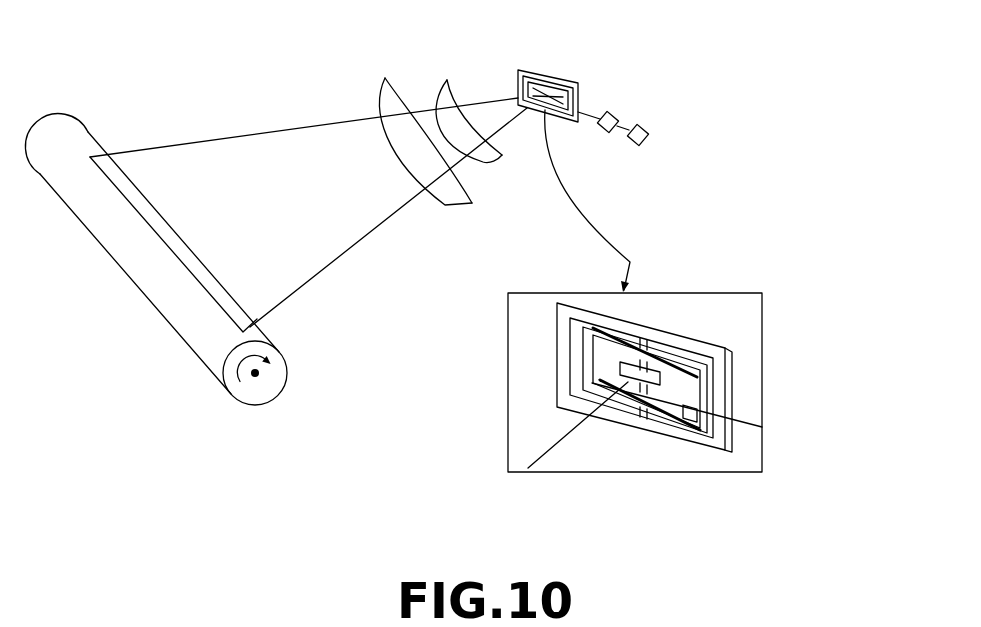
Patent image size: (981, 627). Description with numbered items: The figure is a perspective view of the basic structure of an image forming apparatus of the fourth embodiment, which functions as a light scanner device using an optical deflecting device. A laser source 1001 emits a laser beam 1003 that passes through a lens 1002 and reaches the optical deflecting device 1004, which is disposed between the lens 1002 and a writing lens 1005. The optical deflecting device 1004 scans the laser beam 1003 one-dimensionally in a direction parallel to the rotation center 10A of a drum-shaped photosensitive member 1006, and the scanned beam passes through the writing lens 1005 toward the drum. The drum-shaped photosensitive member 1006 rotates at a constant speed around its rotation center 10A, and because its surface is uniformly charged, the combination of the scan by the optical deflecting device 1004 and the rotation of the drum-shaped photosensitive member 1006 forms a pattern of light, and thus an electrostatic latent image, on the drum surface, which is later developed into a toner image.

The laser source 1001 is at (647, 140).
The lens 1002 is at (615, 114).
The laser beam 1003 is at (563, 120).
The optical deflecting device 1004 is at (512, 395).
The writing lens 1005 is at (448, 53).
The drum-shaped photosensitive member 1006 is at (165, 282).
The rotation center 10A is at (261, 380).